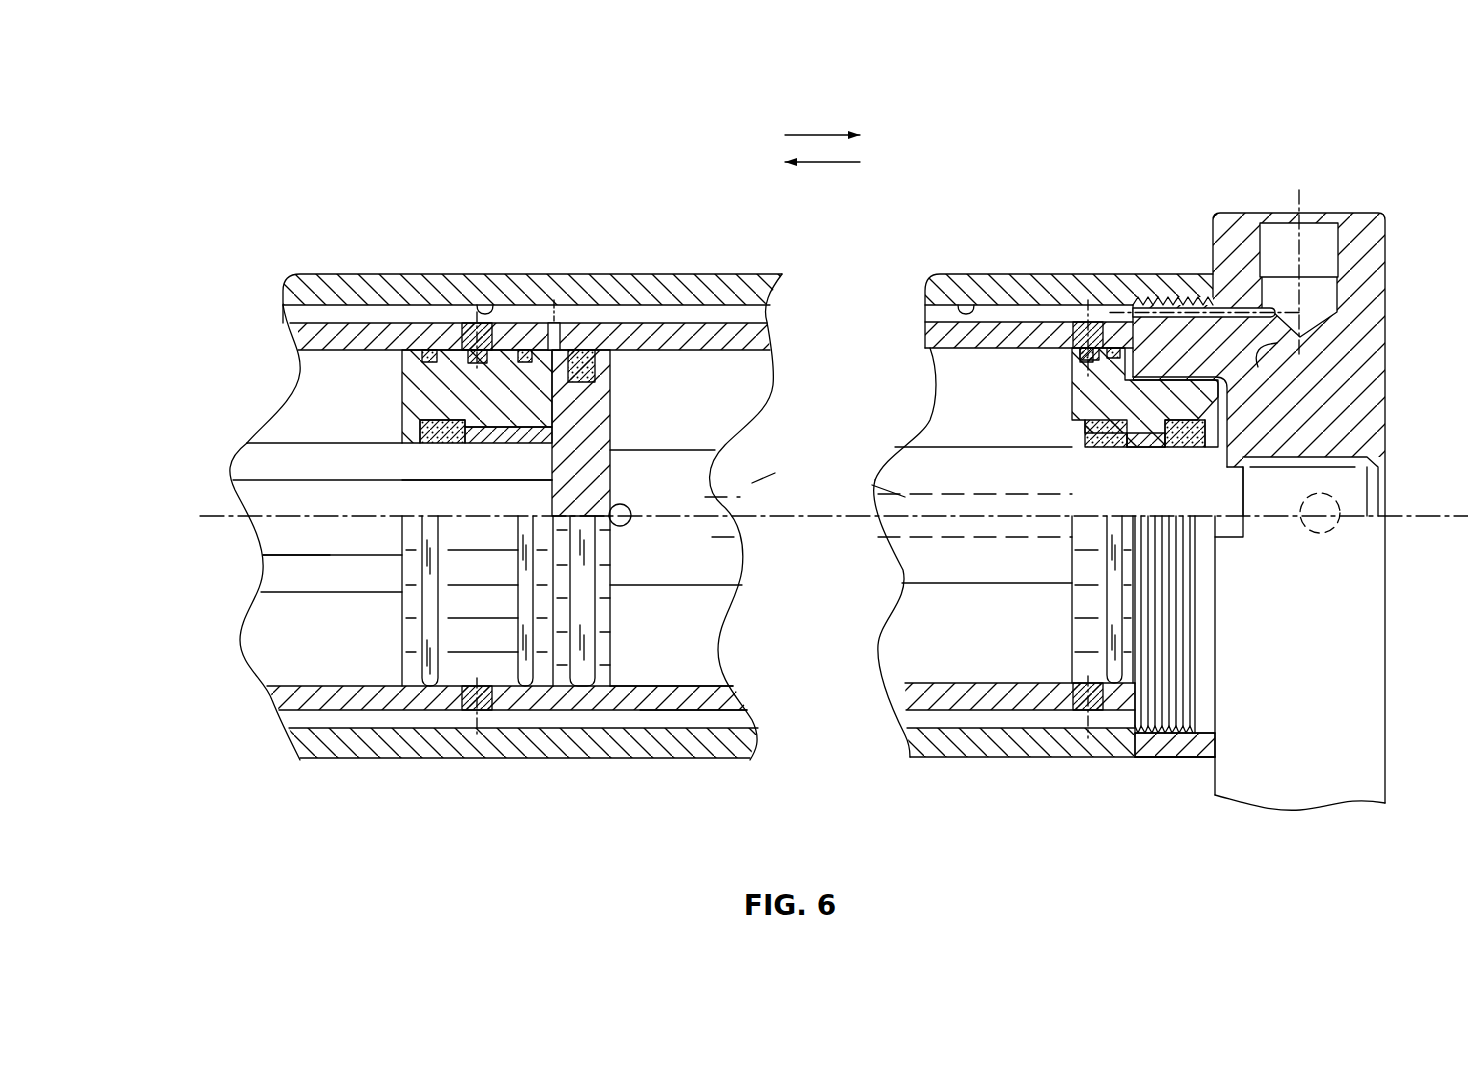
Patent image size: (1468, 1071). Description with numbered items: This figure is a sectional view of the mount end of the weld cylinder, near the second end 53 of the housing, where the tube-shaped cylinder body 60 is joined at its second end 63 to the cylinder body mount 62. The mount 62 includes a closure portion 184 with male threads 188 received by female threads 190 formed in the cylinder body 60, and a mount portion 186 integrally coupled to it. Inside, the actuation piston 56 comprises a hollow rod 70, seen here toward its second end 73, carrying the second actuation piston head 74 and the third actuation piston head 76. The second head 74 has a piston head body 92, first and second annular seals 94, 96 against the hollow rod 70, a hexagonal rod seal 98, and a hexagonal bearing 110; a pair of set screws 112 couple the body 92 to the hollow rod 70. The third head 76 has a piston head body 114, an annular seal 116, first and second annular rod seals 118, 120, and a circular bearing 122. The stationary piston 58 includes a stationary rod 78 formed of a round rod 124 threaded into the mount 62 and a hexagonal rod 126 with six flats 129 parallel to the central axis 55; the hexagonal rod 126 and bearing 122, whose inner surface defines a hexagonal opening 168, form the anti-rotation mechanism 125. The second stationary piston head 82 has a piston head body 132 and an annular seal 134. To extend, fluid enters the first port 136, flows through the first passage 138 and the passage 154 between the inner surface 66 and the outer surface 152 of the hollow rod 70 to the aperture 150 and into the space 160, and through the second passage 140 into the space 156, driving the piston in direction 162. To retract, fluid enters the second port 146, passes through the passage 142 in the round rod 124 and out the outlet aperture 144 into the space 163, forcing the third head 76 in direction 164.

The second end 53 is at (1373, 836).
The central axis 55 is at (852, 468).
The actuation piston 56 is at (660, 316).
The stationary piston 58 is at (725, 418).
The cylinder body 60 is at (345, 290).
The cylinder body mount 62 is at (1373, 206).
The second end 63 is at (1194, 754).
The inner surface 66 is at (479, 316).
The hollow rod 70 is at (372, 722).
The second end 73 is at (1110, 736).
The second actuation piston head 74 is at (330, 650).
The third actuation piston head 76 is at (1058, 662).
The stationary rod 78 is at (321, 440).
The second stationary piston head 82 is at (622, 670).
The piston head body 92 is at (415, 383).
The first annular seal 94 is at (428, 350).
The second annular seal 96 is at (527, 350).
The hexagonal rod seal 98 is at (450, 420).
The hexagonal bearing 110 is at (468, 450).
The set screws 112 is at (470, 330).
The piston head body 114 is at (1095, 405).
The annular seal 116 is at (1090, 363).
The first annular rod seal 118 is at (1095, 448).
The second annular rod seal 120 is at (1183, 448).
The circular bearing 122 is at (1148, 444).
The round rod 124 is at (738, 594).
The anti-rotation mechanism 125 is at (395, 490).
The hexagonal rod 126 is at (263, 438).
The flats 129 is at (290, 458).
The piston head body 132 is at (597, 433).
The annular seal 134 is at (586, 372).
The first port 136 is at (1313, 186).
The first passage 138 is at (1238, 306).
The second passage 140 is at (1273, 338).
The passage 142 is at (865, 575).
The outlet aperture 144 is at (623, 530).
The second port 146 is at (1340, 530).
The aperture 150 is at (563, 310).
The outer surface 152 is at (717, 318).
The passage 154 is at (613, 313).
The space 156 is at (1170, 377).
The space 160 is at (555, 690).
The direction 162 is at (810, 162).
The space 163 is at (688, 667).
The direction 164 is at (818, 135).
The hexagonal opening 168 is at (477, 501).
The closure portion 184 is at (1166, 744).
The mount portion 186 is at (1319, 818).
The male threads 188 is at (1150, 753).
The female threads 190 is at (1173, 733).